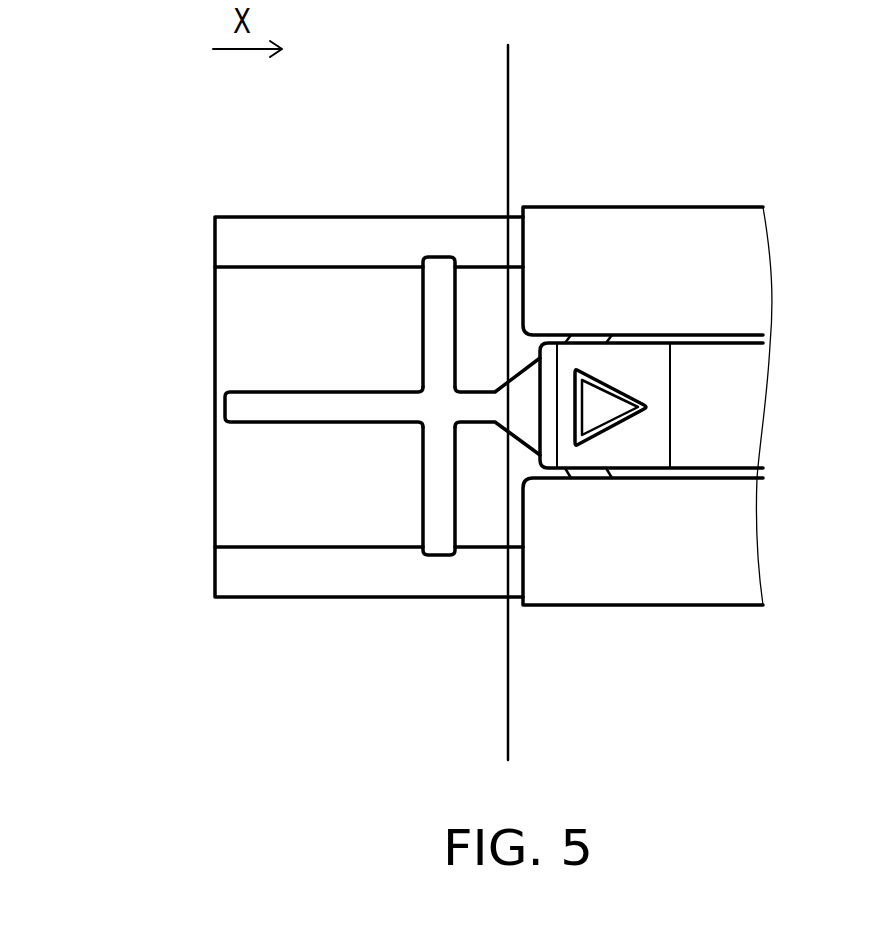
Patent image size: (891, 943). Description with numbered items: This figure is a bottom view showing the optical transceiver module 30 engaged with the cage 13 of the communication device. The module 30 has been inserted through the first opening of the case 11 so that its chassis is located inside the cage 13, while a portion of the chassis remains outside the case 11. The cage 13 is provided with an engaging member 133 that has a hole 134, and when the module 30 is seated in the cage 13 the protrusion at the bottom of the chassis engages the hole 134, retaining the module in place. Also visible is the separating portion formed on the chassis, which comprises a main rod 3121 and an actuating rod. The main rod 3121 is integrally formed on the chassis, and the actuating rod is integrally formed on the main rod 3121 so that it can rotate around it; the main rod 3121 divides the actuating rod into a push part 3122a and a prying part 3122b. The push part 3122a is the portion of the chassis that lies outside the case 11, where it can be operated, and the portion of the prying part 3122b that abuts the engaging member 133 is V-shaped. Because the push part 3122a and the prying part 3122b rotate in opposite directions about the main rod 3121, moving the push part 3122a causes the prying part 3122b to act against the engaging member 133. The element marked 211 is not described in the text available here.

The case 11 is at (508, 133).
The cage 13 is at (604, 190).
The engaging member 133 is at (718, 360).
The hole 134 is at (648, 407).
The triangular protrusion 211 is at (598, 415).
The optical transceiver module 30 is at (201, 415).
The main rod 3121 is at (441, 535).
The push part 3122a is at (326, 400).
The prying part 3122b is at (503, 425).